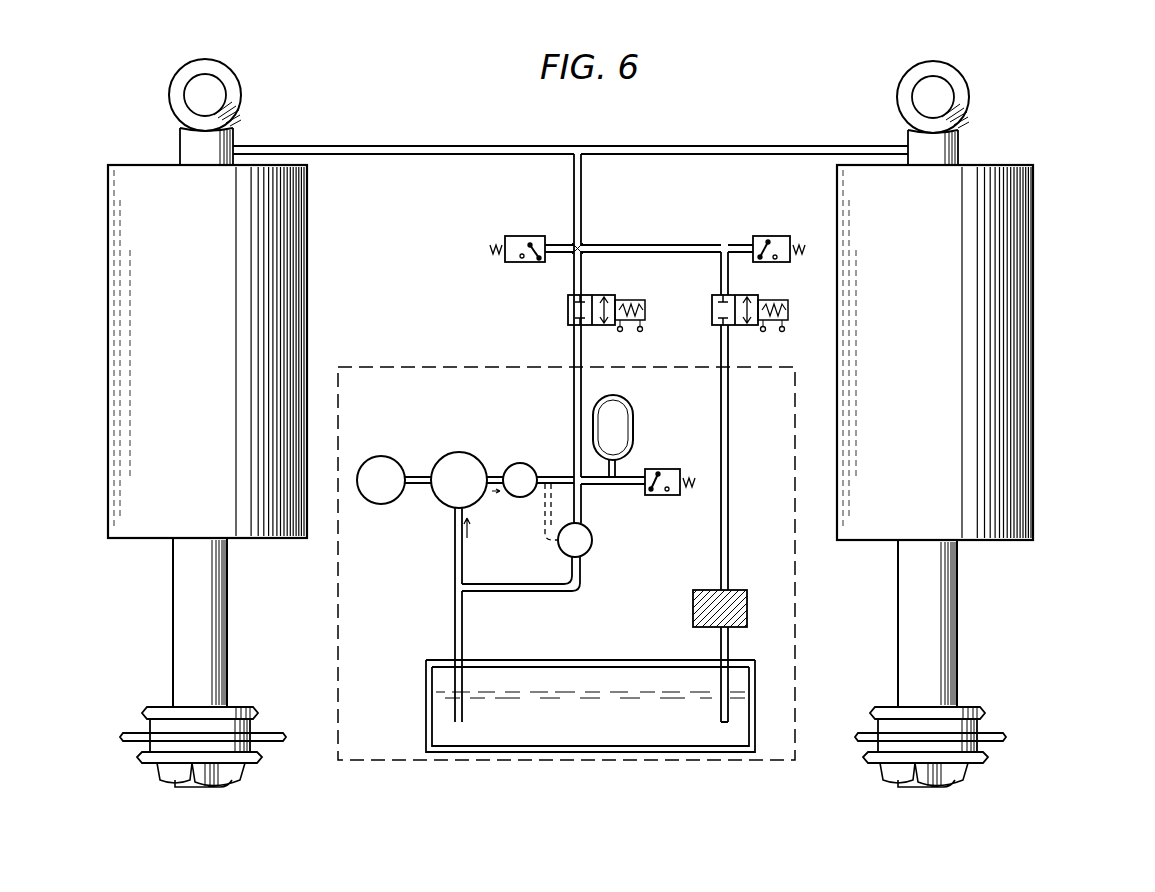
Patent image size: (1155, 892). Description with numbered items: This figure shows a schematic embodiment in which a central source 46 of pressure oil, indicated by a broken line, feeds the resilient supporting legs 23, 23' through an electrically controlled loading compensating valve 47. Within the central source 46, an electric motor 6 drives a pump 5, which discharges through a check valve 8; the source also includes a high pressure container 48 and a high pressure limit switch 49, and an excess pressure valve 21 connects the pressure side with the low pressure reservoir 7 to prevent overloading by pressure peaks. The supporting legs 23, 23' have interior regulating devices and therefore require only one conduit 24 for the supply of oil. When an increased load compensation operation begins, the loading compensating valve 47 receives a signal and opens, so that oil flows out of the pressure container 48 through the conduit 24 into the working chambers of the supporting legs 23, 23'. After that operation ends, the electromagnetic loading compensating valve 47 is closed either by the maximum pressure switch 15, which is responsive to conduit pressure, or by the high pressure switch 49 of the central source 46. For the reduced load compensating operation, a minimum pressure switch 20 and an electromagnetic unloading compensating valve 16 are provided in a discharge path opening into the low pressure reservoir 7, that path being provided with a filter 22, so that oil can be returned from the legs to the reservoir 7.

The pump 5 is at (462, 452).
The electric motor 6 is at (381, 457).
The low pressure reservoir 7 is at (426, 698).
The check valve 8 is at (530, 464).
The maximum pressure switch 15 is at (519, 238).
The electromagnetic unloading compensating valve 16 is at (745, 326).
The minimum pressure switch 20 is at (778, 238).
The excess pressure valve 21 is at (593, 544).
The filter 22 is at (736, 591).
The resilient supporting leg 23 is at (246, 423).
The resilient supporting leg 23' is at (975, 424).
The conduit 24 is at (658, 156).
The central source of pressure oil 46 is at (796, 610).
The loading compensating valve 47 is at (568, 312).
The pressure container 48 is at (623, 412).
The high pressure limit switch 49 is at (671, 469).